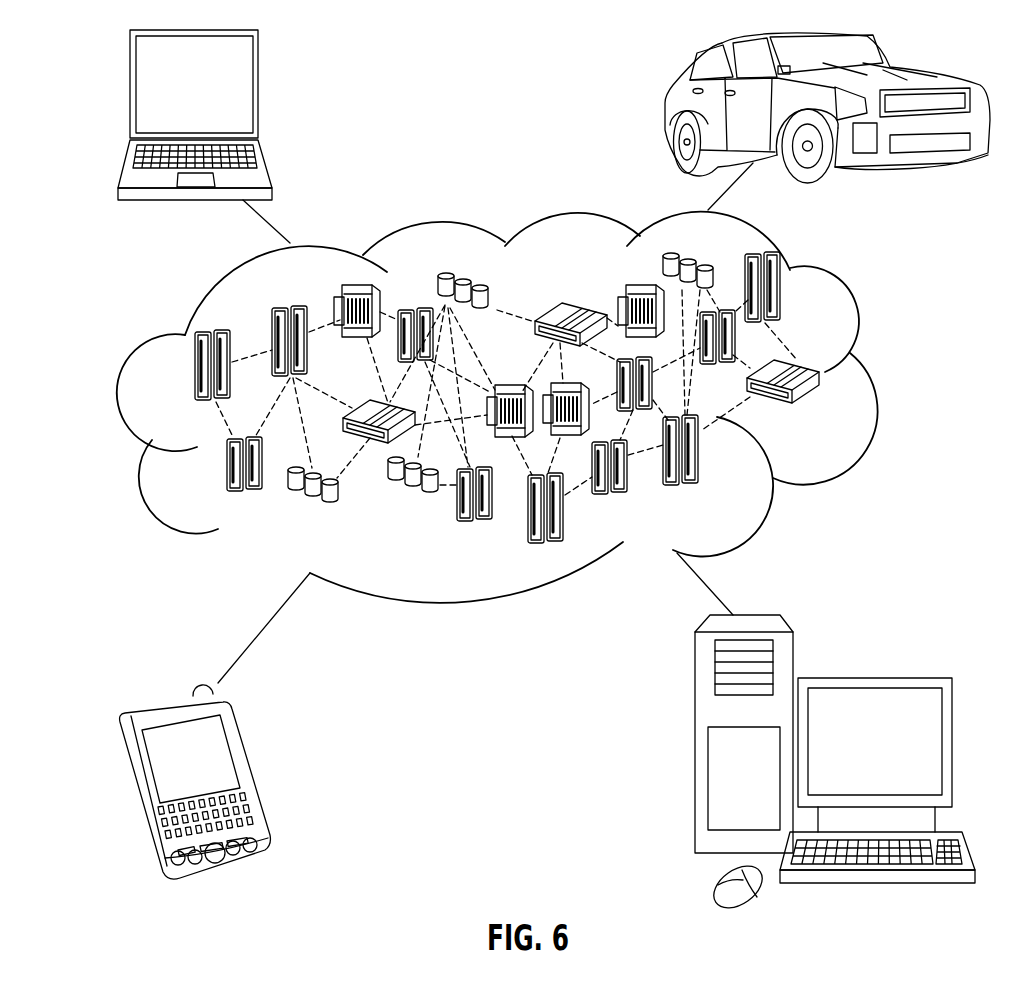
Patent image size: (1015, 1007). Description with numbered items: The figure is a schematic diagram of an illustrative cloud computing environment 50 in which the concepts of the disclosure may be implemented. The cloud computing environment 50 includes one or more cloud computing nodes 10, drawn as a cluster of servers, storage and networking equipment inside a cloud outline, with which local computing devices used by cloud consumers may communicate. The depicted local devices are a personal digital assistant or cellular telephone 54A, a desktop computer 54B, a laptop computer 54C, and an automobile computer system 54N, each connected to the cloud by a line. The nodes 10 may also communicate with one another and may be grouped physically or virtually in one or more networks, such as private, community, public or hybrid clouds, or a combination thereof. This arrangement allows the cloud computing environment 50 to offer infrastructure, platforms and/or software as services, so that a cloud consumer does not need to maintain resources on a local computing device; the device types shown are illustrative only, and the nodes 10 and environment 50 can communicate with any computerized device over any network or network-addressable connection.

The cloud computing node 10 is at (832, 418).
The cloud computing environment 50 is at (525, 407).
The personal digital assistant (PDA) or cellular telephone 54A is at (250, 770).
The desktop computer 54B is at (872, 675).
The laptop computer 54C is at (258, 92).
The automobile computer system 54N is at (670, 108).